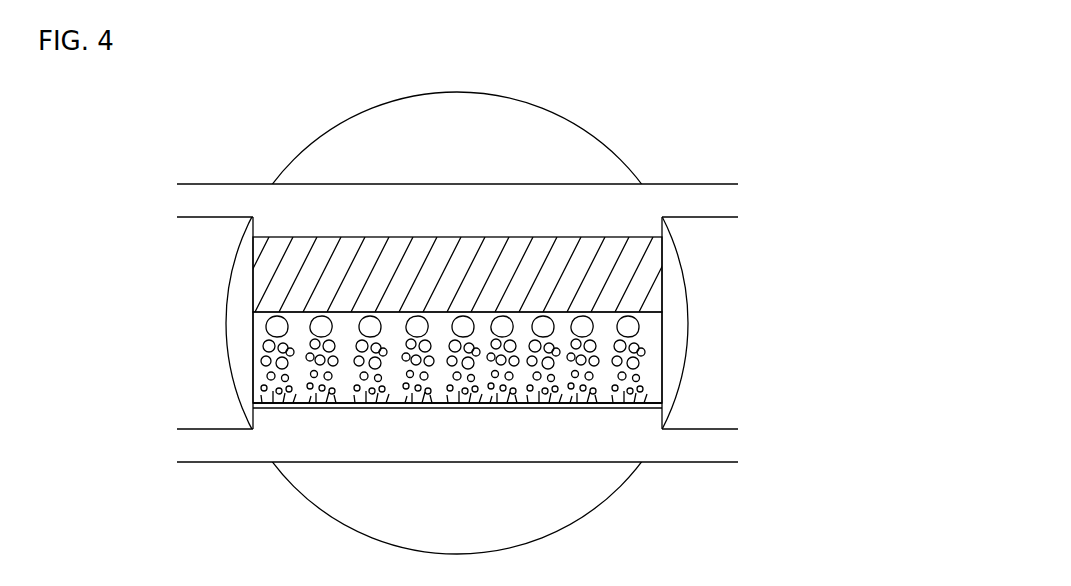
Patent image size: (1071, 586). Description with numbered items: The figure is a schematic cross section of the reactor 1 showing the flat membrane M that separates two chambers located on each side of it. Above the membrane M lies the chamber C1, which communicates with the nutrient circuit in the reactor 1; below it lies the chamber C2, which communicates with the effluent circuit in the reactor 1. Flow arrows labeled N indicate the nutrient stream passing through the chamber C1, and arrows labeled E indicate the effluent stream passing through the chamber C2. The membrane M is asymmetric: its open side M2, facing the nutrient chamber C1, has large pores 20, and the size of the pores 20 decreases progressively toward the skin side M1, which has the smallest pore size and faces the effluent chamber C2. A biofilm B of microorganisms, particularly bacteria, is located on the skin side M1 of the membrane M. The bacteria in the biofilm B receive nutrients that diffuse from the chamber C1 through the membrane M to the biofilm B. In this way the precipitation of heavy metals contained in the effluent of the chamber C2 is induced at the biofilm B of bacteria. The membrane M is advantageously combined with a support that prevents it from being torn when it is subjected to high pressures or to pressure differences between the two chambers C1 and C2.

The reactor 1 is at (618, 114).
The pores 20 is at (270, 364).
The chamber C1 is at (336, 194).
The chamber C2 is at (328, 443).
The nutrient flow N is at (243, 202).
The effluent / wastewater flow E is at (243, 446).
The membrane M is at (458, 357).
The skin side M1 is at (391, 419).
The open side M2 is at (643, 296).
The biofilm B is at (566, 419).